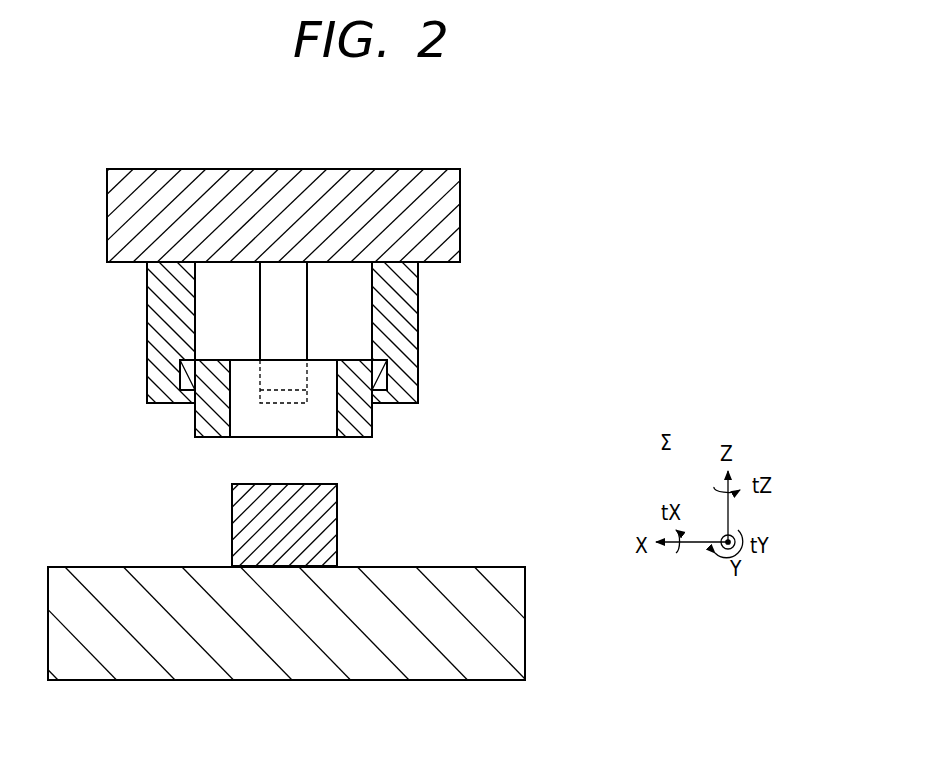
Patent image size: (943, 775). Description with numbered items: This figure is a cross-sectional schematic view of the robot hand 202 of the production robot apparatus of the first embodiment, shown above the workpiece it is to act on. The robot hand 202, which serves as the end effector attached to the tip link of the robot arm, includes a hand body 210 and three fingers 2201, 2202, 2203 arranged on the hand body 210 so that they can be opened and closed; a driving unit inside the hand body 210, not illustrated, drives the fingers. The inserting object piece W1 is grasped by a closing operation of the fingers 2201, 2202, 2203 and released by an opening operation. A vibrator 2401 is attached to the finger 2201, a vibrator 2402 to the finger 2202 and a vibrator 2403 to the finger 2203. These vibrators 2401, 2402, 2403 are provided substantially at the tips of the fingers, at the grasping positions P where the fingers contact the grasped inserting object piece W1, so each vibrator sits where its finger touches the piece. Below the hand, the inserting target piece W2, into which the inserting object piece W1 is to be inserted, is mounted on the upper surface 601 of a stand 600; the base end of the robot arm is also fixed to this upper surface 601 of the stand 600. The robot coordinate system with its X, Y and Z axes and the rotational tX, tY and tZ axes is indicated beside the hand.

The robot hand 202 is at (110, 168).
The hand body 210 is at (113, 212).
The finger 2201 is at (300, 298).
The finger 2202 is at (413, 297).
The finger 2203 is at (155, 300).
The vibrator 2401 is at (280, 377).
The vibrator 2402 is at (380, 373).
The vibrator 2403 is at (183, 377).
The inserting object piece W1 is at (226, 416).
The grasping position P is at (212, 400).
The inserting target piece W2 is at (233, 518).
The stand 600 is at (513, 627).
The upper surface 601 is at (513, 564).